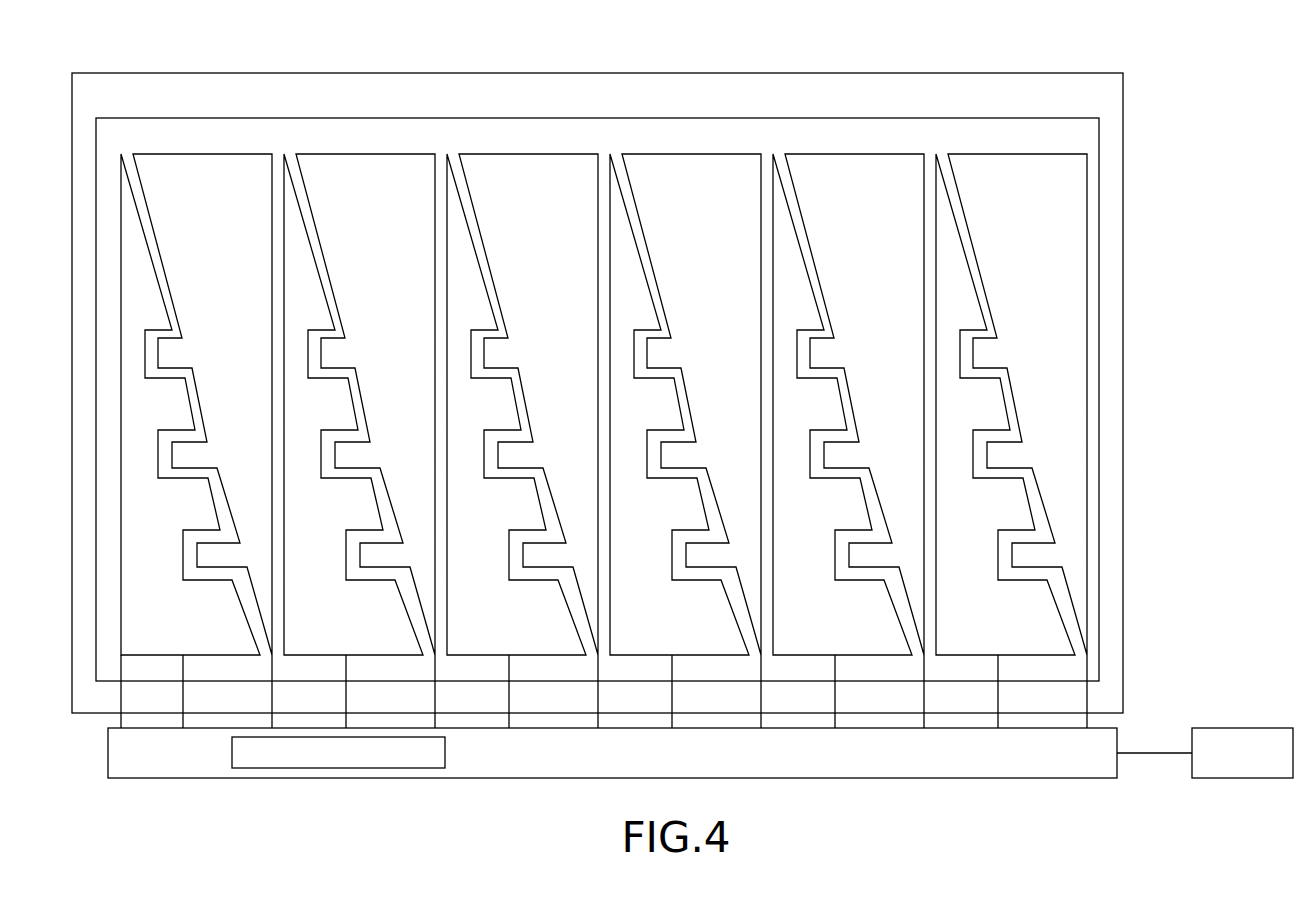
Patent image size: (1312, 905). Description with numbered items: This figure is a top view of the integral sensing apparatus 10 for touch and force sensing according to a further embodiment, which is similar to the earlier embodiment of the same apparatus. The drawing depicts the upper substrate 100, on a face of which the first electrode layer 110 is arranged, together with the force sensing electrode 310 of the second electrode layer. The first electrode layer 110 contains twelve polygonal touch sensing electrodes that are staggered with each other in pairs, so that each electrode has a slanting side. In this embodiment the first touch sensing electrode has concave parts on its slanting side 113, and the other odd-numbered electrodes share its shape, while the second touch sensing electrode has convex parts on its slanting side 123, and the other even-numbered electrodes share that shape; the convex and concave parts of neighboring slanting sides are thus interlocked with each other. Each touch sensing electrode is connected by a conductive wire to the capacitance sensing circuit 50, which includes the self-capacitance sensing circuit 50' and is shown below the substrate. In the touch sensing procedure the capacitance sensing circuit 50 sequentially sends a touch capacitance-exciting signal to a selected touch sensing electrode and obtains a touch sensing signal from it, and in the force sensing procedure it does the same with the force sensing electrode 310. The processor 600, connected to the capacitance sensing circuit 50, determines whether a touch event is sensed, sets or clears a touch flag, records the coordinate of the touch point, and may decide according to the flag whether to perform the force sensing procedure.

The integral sensing apparatus 10 is at (439, 28).
The upper substrate 100 is at (750, 76).
The force sensing electrode 310 is at (598, 123).
The first electrode layer 110 is at (853, 157).
The slanting side 113 is at (186, 398).
The slanting side 123 is at (198, 404).
The capacitance sensing circuit 50 is at (612, 734).
The self-capacitance sensing circuit 50' is at (387, 752).
The processor 600 is at (1242, 738).